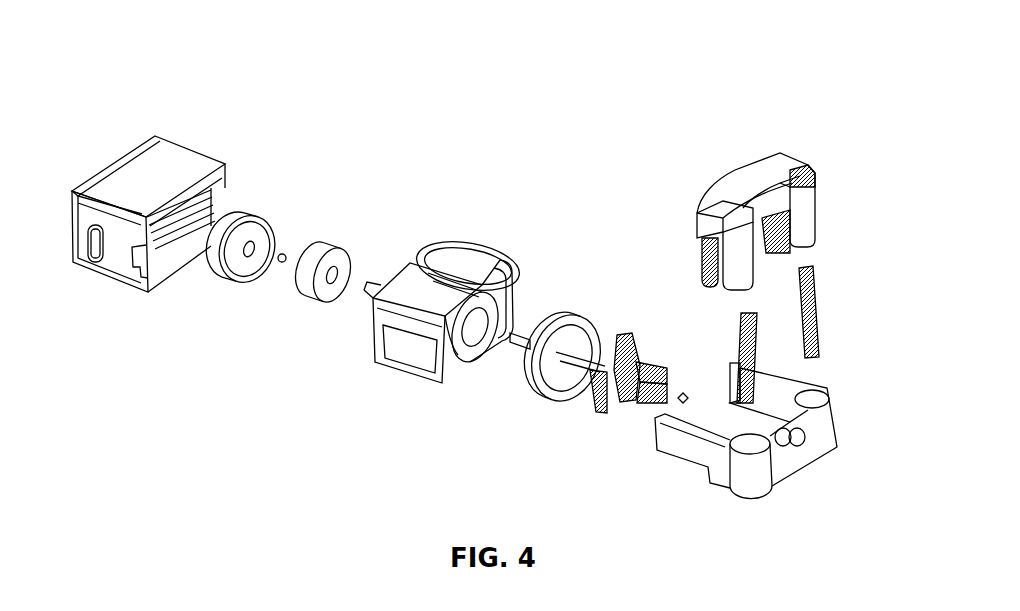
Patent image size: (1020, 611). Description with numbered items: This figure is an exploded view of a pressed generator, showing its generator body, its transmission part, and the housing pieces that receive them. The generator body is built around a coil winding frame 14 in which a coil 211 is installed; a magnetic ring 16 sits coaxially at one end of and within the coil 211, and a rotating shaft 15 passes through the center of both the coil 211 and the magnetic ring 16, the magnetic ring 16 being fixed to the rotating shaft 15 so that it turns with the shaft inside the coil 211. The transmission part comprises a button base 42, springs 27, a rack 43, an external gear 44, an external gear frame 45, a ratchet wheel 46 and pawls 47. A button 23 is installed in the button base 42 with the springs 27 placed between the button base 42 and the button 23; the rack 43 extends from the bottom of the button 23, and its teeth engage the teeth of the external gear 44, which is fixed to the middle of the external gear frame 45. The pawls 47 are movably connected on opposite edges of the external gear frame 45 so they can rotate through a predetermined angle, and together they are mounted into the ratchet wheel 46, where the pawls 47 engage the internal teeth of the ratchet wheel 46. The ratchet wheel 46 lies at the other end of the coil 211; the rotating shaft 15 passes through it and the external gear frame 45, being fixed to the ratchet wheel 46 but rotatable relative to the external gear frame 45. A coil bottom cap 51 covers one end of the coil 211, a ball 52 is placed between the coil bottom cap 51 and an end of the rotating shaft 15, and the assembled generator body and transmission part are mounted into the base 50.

The base 50 is at (156, 156).
The coil bottom cap 51 is at (263, 166).
The ball 52 is at (324, 163).
The magnetic ring 16 is at (366, 200).
The coil winding frame 14 is at (438, 250).
The coil 211 is at (510, 196).
The rotating shaft 15 is at (565, 276).
The ratchet wheel 46 is at (583, 253).
The pawls 47 is at (662, 286).
The external gear frame 45 is at (683, 344).
The external gear 44 is at (682, 368).
The button 23 is at (783, 192).
The rack 43 is at (838, 158).
The springs 27 is at (848, 276).
The button base 42 is at (779, 406).